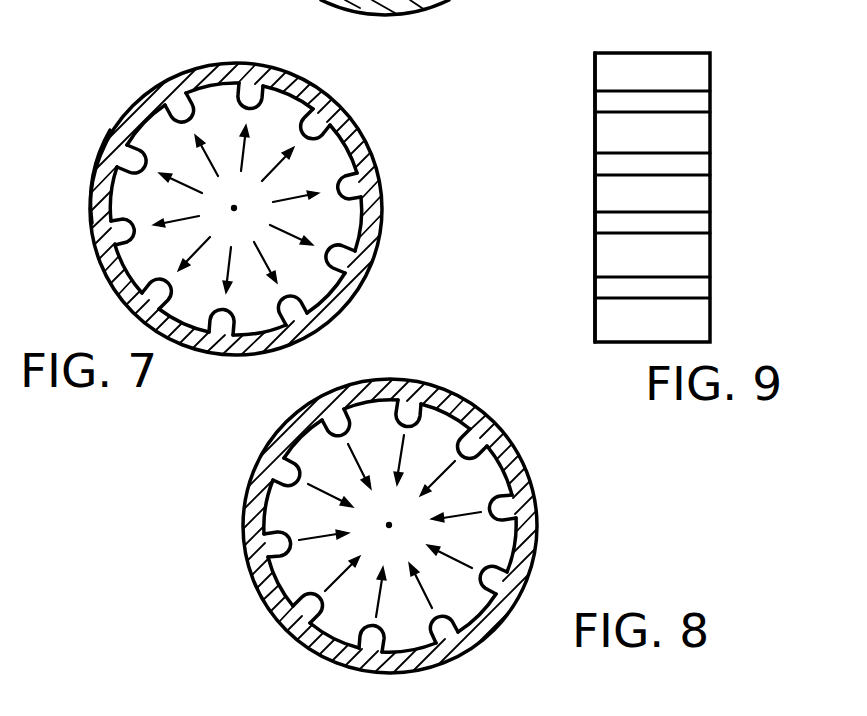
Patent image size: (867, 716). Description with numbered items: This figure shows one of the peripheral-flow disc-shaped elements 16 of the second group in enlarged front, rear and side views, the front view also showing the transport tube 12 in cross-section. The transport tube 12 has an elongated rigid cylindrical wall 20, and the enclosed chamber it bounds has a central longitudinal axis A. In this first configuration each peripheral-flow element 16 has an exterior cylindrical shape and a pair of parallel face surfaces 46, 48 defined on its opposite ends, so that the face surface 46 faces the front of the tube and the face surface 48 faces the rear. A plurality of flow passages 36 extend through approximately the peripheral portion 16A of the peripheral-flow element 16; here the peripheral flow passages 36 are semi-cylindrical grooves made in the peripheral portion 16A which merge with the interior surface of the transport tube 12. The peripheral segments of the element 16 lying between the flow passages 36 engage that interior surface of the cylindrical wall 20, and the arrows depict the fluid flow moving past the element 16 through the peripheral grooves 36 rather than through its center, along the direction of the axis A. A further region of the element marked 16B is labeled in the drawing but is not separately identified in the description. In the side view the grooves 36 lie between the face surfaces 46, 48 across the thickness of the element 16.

In FIG. 7, the transport tube 12 is at (128, 107).
In FIG. 8, the transport tube 12 is at (537, 508).
In FIG. 7, the peripheral-flow disc-shaped element 16 is at (367, 153).
In FIG. 8, the peripheral-flow disc-shaped element 16 is at (530, 555).
In FIG. 9, the peripheral-flow disc-shaped element 16 is at (712, 62).
In FIG. 7, the peripheral portion 16A is at (207, 107).
In FIG. 8, the peripheral portion 16A is at (437, 422).
In FIG. 9, the peripheral portion 16A is at (652, 65).
In FIG. 7, the second land portion of inner surface 16B is at (233, 218).
In FIG. 8, the second land portion of inner surface 16B is at (412, 531).
In FIG. 9, the second land portion of inner surface 16B is at (697, 195).
In FIG. 7, the cylindrical wall 20 is at (350, 130).
In FIG. 8, the cylindrical wall 20 is at (470, 442).
In FIG. 7, the flow passages 36 is at (318, 103).
In FIG. 8, the flow passages 36 is at (498, 503).
In FIG. 9, the flow passages 36 is at (698, 100).
In FIG. 7, the face surface 46 is at (118, 182).
In FIG. 9, the face surface 46 is at (595, 137).
In FIG. 8, the face surface 48 is at (283, 495).
In FIG. 9, the face surface 48 is at (712, 252).
In FIG. 7, the central longitudinal axis A is at (234, 207).
In FIG. 8, the central longitudinal axis A is at (389, 522).